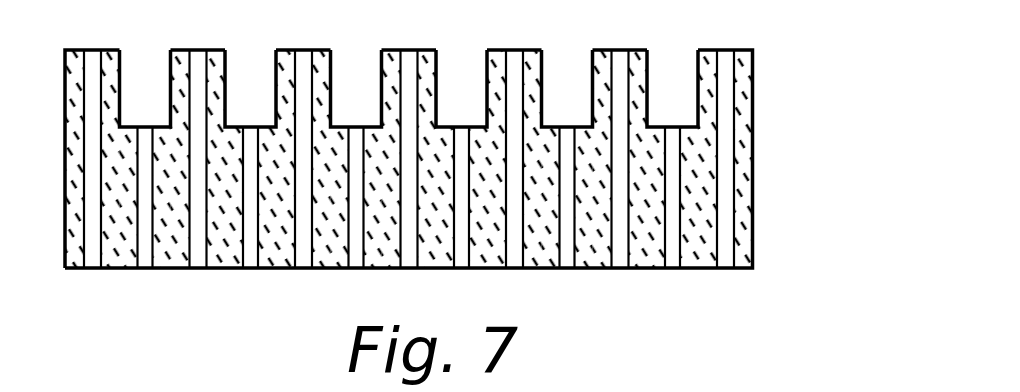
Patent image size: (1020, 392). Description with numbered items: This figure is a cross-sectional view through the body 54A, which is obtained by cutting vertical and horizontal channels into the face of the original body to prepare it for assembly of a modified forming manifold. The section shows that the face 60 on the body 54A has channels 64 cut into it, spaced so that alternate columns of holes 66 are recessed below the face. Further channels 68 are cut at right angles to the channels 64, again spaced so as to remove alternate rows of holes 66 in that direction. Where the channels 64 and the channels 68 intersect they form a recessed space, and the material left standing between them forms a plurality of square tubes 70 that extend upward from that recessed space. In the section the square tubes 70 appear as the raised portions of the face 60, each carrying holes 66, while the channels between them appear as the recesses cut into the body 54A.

The body 54A is at (766, 163).
The face 60 is at (755, 42).
The channels 64 is at (247, 78).
The holes 66 is at (145, 255).
The channels 68 is at (457, 83).
The square tubes 70 is at (217, 50).